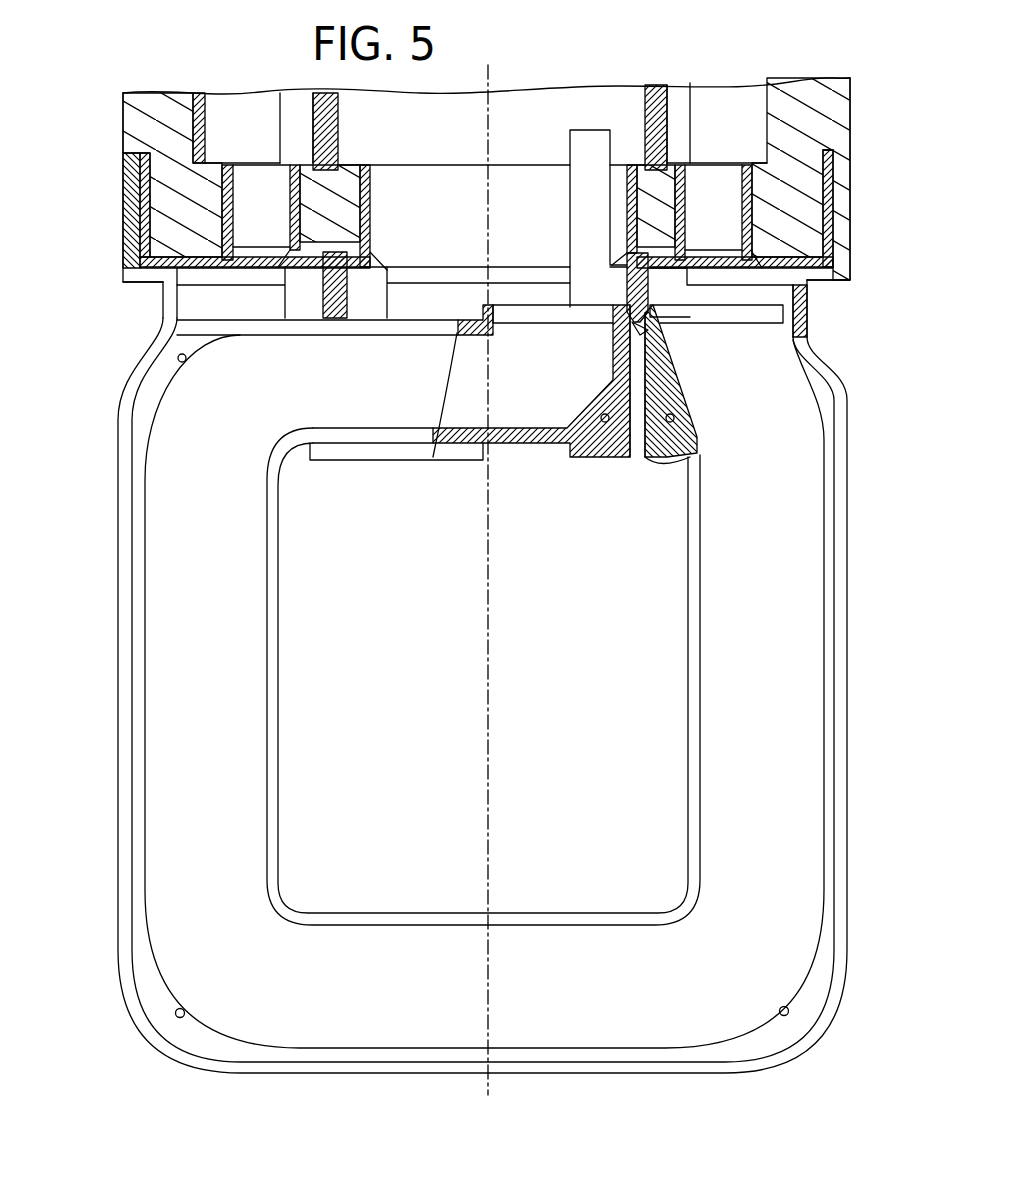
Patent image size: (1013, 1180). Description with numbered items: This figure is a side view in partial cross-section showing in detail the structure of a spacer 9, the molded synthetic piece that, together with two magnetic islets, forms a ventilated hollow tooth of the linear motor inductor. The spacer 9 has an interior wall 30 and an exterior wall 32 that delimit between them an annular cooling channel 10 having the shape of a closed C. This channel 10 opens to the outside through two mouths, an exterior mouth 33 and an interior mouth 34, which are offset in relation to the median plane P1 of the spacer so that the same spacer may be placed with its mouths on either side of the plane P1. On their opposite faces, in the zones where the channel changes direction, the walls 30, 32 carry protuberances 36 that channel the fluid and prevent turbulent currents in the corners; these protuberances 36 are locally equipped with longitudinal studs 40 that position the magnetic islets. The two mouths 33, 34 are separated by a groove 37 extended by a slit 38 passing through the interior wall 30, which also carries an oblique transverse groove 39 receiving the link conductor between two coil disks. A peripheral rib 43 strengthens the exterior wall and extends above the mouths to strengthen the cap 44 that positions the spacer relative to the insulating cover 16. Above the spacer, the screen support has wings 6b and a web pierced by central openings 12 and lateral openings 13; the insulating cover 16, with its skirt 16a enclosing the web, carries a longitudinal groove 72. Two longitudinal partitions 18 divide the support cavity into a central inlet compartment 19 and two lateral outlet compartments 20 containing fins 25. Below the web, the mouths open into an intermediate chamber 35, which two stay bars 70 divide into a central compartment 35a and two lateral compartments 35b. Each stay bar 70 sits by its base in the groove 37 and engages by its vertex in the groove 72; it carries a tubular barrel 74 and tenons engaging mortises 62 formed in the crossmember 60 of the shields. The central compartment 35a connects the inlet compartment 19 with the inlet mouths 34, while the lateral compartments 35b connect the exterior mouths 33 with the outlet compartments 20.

The median plane P1 is at (508, 570).
The wings 6b is at (148, 116).
The spacer 9 is at (106, 818).
The annular cooling channel 10 is at (175, 605).
The central openings 12 is at (543, 173).
The lateral openings 13 is at (713, 200).
The insulating cover 16 is at (840, 226).
The skirt 16a is at (830, 160).
The longitudinal partitions 18 is at (325, 125).
The central inlet compartment 19 is at (405, 115).
The lateral outlet compartments 20 is at (292, 112).
The fins 25 is at (233, 105).
The interior wall 30 is at (278, 712).
The exterior wall 32 is at (120, 705).
The exterior mouth 33 is at (807, 330).
The interior mouth 34 is at (547, 313).
The intermediate chamber 35 is at (472, 263).
The central compartment 35a is at (430, 290).
The lateral compartments 35b is at (195, 300).
The protuberances 36 is at (148, 392).
The groove 37 is at (668, 300).
The slit 38 is at (637, 457).
The oblique transverse groove 39 is at (510, 450).
The longitudinal studs 40 is at (182, 363).
The peripheral rib 43 is at (363, 300).
The cap 44 is at (125, 268).
The crossmember 60 is at (256, 272).
The mortises 62 is at (673, 277).
The stay bars 70 is at (347, 297).
The longitudinal groove 72 is at (363, 270).
The tubular barrel 74 is at (592, 165).